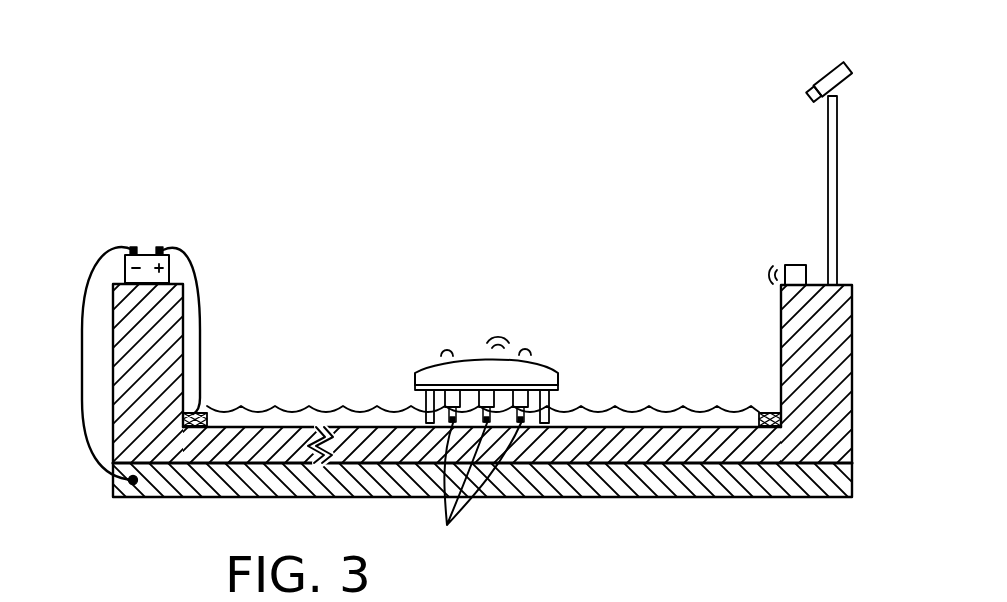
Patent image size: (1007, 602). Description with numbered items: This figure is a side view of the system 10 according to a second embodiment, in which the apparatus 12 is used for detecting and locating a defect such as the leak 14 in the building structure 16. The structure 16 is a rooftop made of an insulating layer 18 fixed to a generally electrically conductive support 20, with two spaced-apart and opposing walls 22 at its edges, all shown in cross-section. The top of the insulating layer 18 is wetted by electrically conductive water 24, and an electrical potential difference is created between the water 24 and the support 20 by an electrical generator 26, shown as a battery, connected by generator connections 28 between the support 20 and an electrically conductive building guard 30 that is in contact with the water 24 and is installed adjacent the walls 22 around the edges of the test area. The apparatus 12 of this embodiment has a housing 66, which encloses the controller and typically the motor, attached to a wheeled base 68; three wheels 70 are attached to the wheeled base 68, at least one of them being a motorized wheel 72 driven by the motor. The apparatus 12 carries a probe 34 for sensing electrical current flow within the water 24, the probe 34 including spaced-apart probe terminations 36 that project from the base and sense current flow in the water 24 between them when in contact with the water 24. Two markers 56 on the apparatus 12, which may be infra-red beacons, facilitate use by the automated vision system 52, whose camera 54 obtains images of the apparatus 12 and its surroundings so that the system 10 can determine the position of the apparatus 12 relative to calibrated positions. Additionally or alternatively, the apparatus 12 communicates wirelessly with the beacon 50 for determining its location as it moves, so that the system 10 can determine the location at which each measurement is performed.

The system 10 is at (114, 64).
The apparatus 12 is at (566, 212).
The leak 14 is at (322, 426).
The building structure 16 is at (858, 312).
The insulating layer 18 is at (680, 446).
The support 20 is at (611, 480).
The walls 22 is at (150, 370).
The water 24 is at (712, 418).
The electrical generator 26 is at (144, 262).
The generator connections 28 is at (85, 270).
The building guard 30 is at (205, 412).
The probe 34 is at (591, 397).
The probe terminations 36 is at (430, 403).
The beacon 50 is at (799, 265).
The automated vision system 52 is at (740, 90).
The camera 54 is at (824, 85).
The markers 56 is at (447, 351).
The housing 66 is at (463, 366).
The wheeled base 68 is at (420, 402).
The wheels 70 is at (471, 476).
The motorized wheel 72 is at (486, 402).